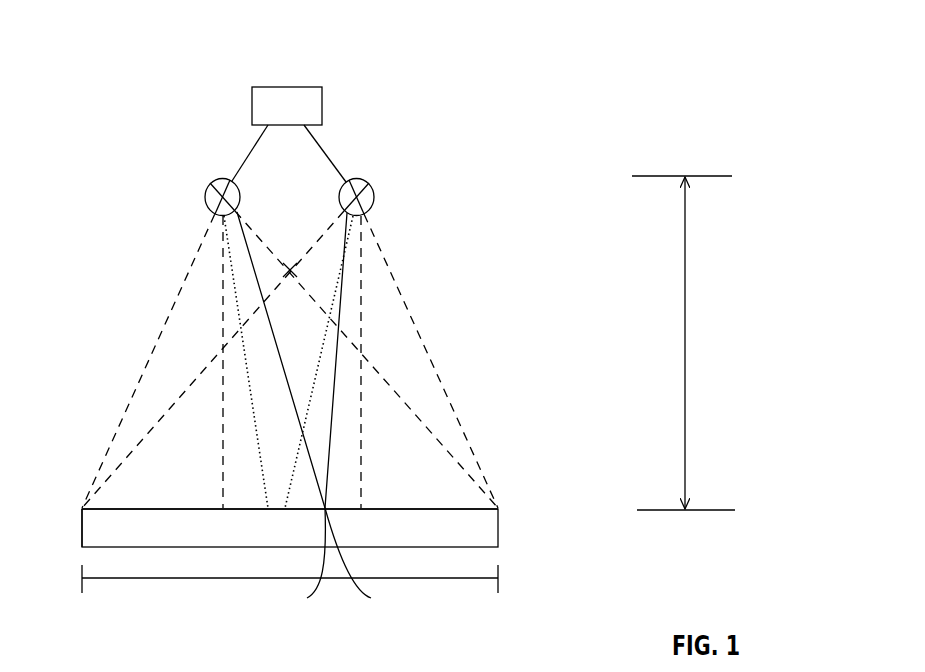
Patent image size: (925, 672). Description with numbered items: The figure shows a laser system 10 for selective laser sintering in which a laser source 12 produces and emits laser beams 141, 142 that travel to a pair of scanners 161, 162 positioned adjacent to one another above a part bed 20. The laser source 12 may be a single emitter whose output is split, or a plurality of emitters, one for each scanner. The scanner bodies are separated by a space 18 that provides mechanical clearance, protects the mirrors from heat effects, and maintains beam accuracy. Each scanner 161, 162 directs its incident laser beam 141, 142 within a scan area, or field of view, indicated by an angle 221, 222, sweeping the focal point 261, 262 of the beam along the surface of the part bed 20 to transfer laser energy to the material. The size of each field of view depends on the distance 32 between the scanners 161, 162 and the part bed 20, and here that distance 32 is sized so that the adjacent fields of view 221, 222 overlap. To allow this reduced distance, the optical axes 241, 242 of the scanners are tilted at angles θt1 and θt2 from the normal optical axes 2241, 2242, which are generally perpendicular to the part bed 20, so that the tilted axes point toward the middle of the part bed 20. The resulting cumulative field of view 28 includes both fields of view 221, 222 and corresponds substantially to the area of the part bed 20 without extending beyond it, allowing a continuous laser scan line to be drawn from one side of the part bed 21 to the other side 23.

The laser system 10 is at (577, 51).
The laser source 12 is at (322, 87).
The laser beam 141 is at (244, 158).
The laser beam 142 is at (325, 147).
The scanner 161 is at (187, 188).
The scanner 162 is at (380, 193).
The space 18 is at (337, 198).
The angle 221 is at (313, 297).
The angle 222 is at (308, 250).
The optical axis 241 is at (250, 402).
The optical axis 242 is at (321, 373).
The normal optical axis 2241 is at (223, 485).
The normal optical axis 2242 is at (362, 471).
The focal point 261 is at (290, 605).
The focal point 262 is at (389, 605).
The part bed 20 is at (463, 528).
The side of the part bed 21 is at (82, 530).
The side of the part bed 23 is at (498, 528).
The cumulative field of view 28 is at (133, 581).
The distance 32 is at (698, 343).